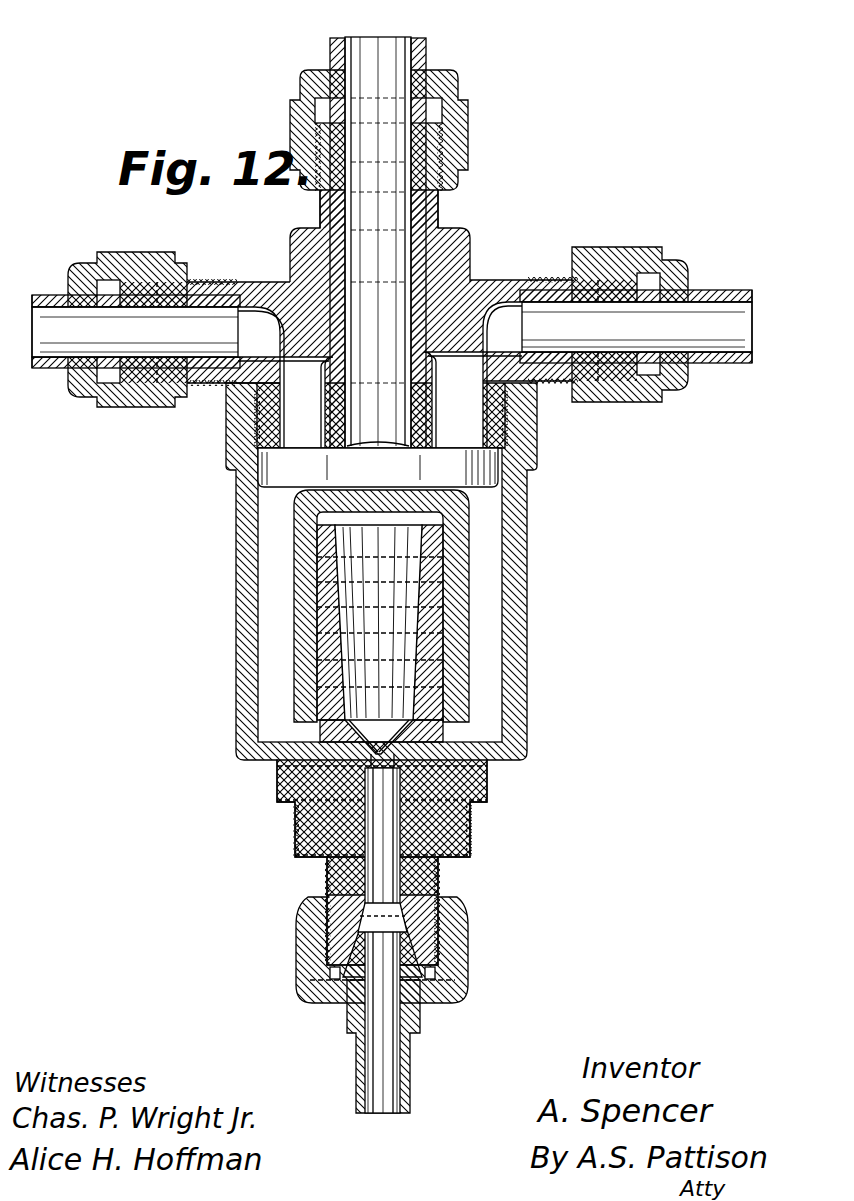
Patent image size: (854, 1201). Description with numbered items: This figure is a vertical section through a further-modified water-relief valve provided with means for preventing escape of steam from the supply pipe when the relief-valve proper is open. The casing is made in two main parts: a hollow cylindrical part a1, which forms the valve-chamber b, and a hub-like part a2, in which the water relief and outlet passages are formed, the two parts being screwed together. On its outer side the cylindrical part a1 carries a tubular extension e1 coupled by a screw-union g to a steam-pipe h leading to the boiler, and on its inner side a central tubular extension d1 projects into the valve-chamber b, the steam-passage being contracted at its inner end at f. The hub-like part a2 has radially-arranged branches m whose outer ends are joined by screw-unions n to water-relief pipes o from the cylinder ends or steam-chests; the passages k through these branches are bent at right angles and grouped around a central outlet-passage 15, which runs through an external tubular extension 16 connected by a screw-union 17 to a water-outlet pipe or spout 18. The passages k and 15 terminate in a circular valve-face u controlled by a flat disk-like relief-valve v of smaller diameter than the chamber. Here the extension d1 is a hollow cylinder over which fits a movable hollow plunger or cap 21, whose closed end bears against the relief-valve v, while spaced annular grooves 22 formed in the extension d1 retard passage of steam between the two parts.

The water-outlet pipe or spout 18 is at (378, 243).
The screw-union 17 is at (302, 96).
The tubular extension 16 is at (440, 202).
The hub-like part a2 is at (292, 257).
The screw-unions n is at (124, 266).
The radially-arranged tubular extensions or branches m is at (205, 270).
The water-relief pipes o is at (392, 329).
The water-relief passages k is at (310, 335).
The central outlet-passage 15 is at (378, 242).
The circular valve-face u is at (426, 445).
The relief-valve v is at (378, 467).
The hollow cylindrical part a1 is at (247, 529).
The hollow plunger or cap 21 is at (447, 579).
The annular grooves 22 is at (442, 605).
The central tubular extension d1 is at (426, 641).
The valve-chamber b is at (391, 606).
The contracted part of steam-passage f is at (380, 745).
The tubular extension e1 is at (337, 877).
The screw-union g is at (300, 946).
The steam-pipe h is at (409, 1074).